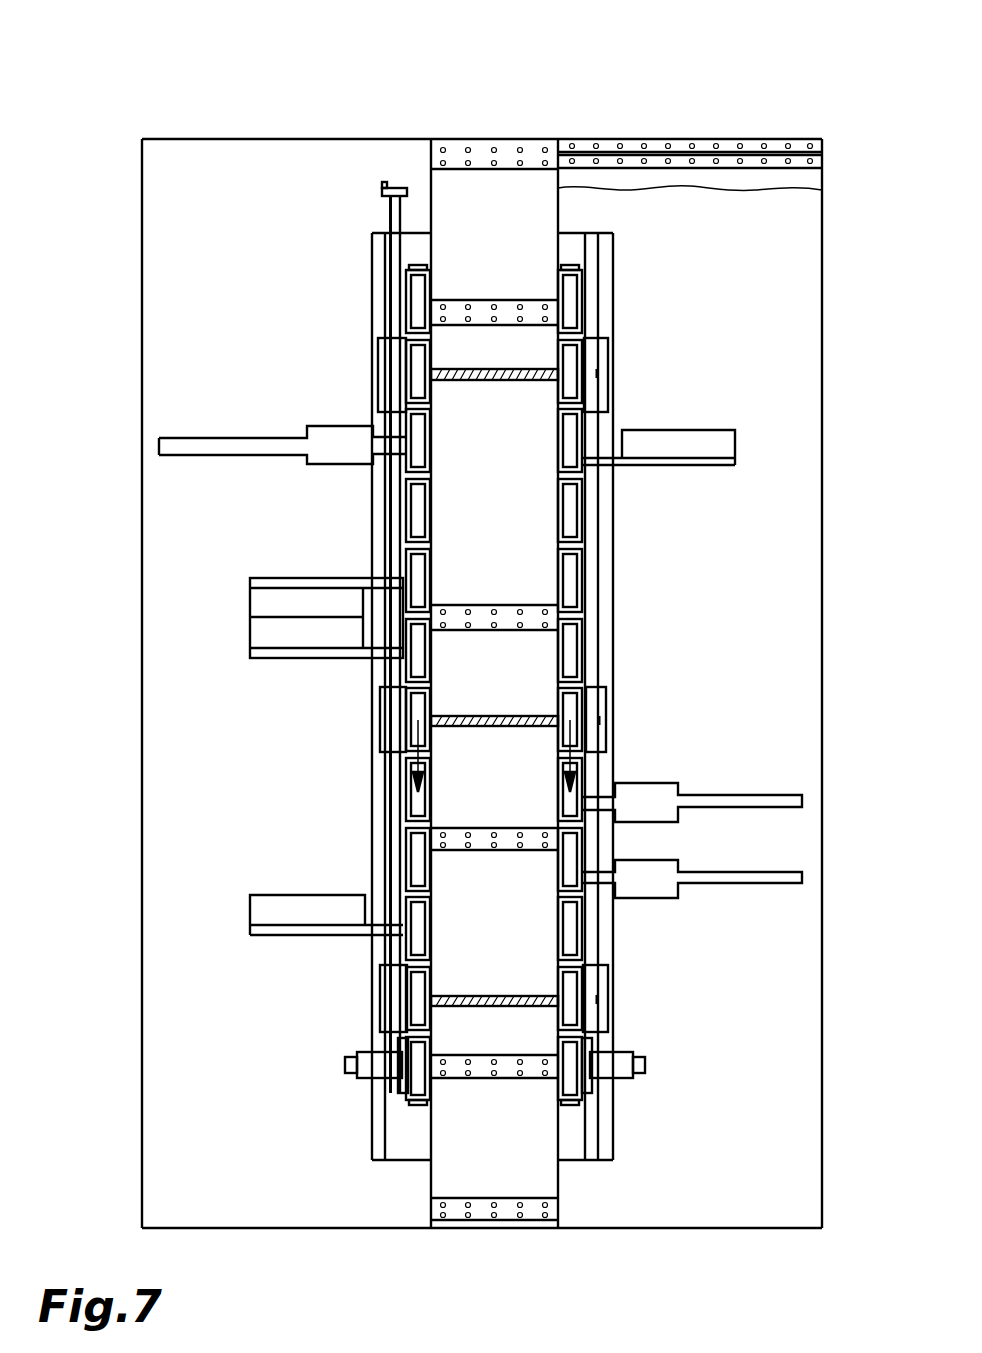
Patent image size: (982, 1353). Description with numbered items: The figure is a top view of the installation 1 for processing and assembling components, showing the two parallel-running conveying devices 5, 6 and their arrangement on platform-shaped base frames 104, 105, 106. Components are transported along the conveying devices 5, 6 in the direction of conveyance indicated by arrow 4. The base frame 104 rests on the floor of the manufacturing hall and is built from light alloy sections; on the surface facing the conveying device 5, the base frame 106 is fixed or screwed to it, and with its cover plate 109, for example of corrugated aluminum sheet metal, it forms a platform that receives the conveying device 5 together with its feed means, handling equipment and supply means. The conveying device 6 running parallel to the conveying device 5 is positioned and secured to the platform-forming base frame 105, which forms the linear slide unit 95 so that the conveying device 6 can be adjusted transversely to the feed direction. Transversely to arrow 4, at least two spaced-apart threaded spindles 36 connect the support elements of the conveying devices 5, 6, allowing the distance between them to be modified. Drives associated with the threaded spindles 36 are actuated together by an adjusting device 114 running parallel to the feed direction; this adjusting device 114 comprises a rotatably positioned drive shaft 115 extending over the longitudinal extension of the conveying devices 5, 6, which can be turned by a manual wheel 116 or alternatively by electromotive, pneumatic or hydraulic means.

The installation 1 is at (722, 100).
The direction of conveyance 4 is at (424, 732).
The conveying device 5 is at (358, 277).
The conveying device 6 is at (660, 318).
The threaded spindle 36 is at (498, 381).
The linear slide unit 95 is at (845, 152).
The base frame 104 is at (503, 200).
The base frame 105 is at (793, 355).
The base frame 106 is at (208, 165).
The cover plate 109 is at (192, 322).
The adjusting device 114 is at (373, 214).
The drive shaft 115 is at (398, 318).
The manual wheel 116 is at (390, 194).